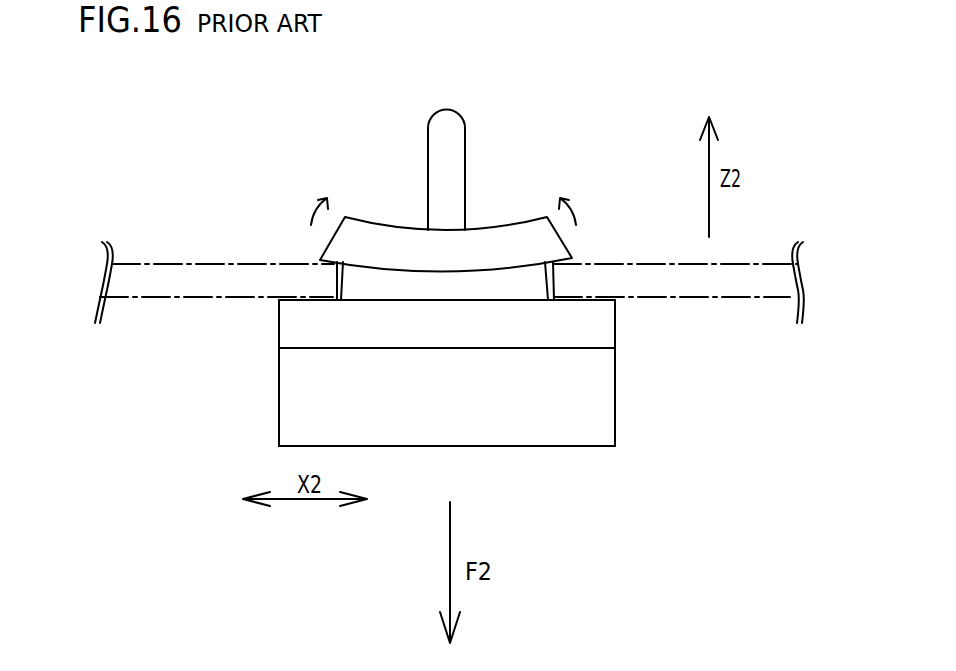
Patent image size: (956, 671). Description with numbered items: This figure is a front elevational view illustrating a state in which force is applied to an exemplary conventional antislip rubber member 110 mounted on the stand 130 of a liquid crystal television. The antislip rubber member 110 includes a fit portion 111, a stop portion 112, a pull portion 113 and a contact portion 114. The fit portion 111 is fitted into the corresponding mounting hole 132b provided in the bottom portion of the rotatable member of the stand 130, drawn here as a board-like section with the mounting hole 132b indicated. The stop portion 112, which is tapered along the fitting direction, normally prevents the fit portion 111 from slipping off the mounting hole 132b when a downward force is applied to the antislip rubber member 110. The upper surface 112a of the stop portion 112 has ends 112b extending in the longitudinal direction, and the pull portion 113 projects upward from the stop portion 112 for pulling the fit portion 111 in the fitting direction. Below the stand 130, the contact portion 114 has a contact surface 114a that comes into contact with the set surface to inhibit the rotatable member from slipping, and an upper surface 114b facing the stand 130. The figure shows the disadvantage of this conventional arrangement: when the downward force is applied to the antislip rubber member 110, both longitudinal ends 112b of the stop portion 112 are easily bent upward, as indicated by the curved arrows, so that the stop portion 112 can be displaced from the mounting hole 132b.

The antislip rubber member 110 is at (507, 106).
The fit portion 111 is at (360, 280).
The stop portion 112 is at (537, 245).
The upper surface of the stop portion 112a is at (483, 228).
The ends of the stop portion 112b is at (345, 217).
The pull portion 113 is at (447, 130).
The contact portion 114 is at (617, 393).
The contact surface 114a is at (535, 448).
The upper surface of the contact portion 114b is at (583, 299).
The stand 130 is at (137, 263).
The mounting hole 132b is at (342, 287).